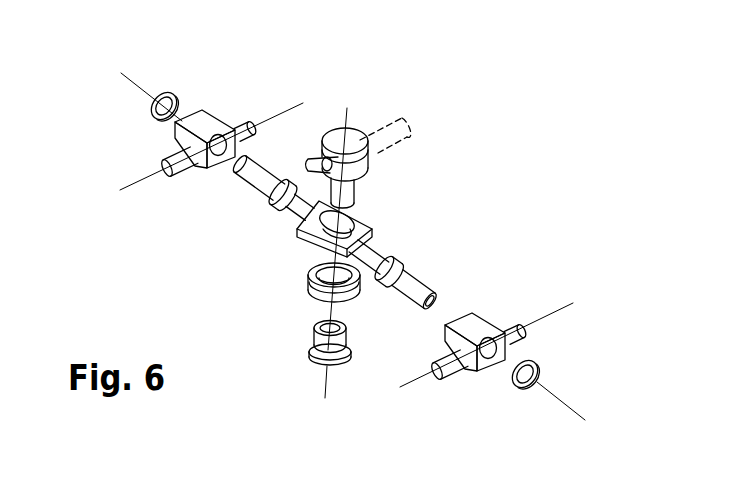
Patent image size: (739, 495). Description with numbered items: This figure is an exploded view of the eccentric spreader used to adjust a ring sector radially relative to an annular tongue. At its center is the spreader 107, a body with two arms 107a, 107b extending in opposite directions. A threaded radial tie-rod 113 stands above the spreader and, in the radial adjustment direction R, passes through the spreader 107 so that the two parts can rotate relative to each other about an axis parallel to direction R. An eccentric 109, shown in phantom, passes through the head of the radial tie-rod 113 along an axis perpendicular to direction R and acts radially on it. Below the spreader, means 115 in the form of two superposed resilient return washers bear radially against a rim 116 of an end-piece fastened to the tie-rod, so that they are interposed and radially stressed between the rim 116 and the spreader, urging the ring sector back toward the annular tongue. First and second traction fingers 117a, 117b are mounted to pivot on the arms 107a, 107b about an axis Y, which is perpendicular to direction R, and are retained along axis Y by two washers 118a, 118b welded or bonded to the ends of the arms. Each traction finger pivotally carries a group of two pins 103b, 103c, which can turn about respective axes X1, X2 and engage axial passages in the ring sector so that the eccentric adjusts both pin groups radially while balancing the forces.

The other pins 103b is at (253, 148).
The other pins 103c is at (440, 382).
The spreader 107 is at (380, 216).
The arm of the spreader 107a is at (243, 187).
The arm of the spreader 107b is at (423, 278).
The eccentric 109 is at (407, 150).
The radial tie-rod 113 is at (346, 148).
The means for urging return 115 is at (306, 270).
The rim 116 is at (300, 353).
The first traction finger 117a is at (224, 108).
The second traction finger 117b is at (488, 312).
The washer 118a is at (170, 92).
The washer 118b is at (540, 370).
The axis X1 is at (136, 184).
The axis X2 is at (403, 387).
The axis Y is at (560, 400).
The radial adjustment direction R is at (327, 378).